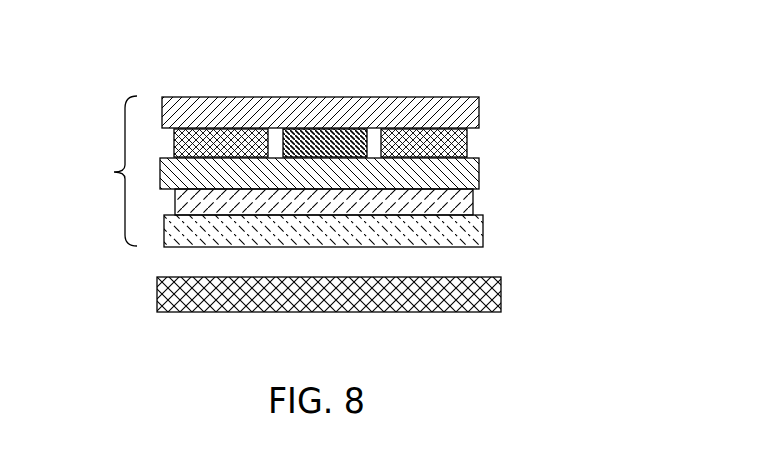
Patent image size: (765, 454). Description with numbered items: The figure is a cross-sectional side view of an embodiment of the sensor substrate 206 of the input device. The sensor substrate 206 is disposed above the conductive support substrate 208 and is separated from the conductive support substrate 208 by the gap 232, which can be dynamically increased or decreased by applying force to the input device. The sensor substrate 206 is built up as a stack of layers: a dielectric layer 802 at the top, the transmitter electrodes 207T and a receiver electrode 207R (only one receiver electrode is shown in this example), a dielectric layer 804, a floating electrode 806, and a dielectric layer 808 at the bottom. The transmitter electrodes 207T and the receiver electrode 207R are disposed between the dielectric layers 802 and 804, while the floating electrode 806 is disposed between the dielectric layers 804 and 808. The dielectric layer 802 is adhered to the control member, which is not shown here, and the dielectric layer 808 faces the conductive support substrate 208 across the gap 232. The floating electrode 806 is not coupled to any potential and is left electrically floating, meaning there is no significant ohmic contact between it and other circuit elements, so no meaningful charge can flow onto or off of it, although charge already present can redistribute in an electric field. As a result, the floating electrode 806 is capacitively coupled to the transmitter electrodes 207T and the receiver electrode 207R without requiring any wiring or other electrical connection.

The sensor substrate 206 is at (112, 172).
The transmitter electrodes 207T is at (200, 140).
The receiver electrodes 207R is at (348, 140).
The dielectric layer 802 is at (479, 107).
The dielectric layer 804 is at (479, 173).
The floating electrode 806 is at (473, 197).
The dielectric layer 808 is at (483, 233).
The gap 232 is at (215, 267).
The conductive support substrate 208 is at (501, 293).